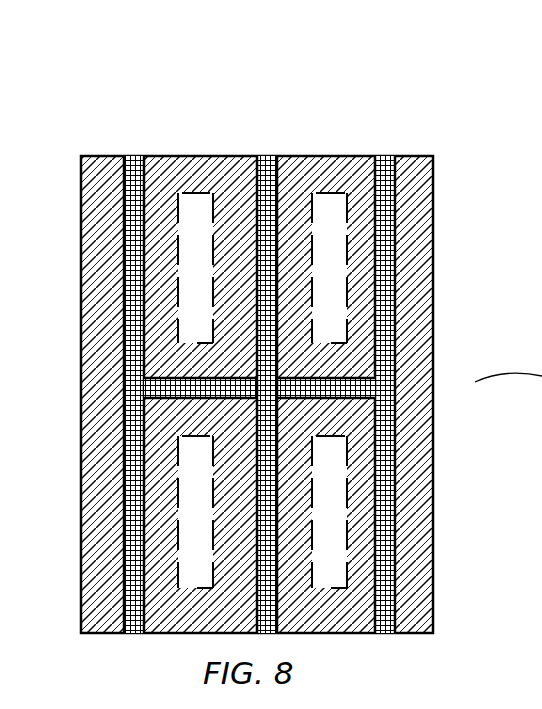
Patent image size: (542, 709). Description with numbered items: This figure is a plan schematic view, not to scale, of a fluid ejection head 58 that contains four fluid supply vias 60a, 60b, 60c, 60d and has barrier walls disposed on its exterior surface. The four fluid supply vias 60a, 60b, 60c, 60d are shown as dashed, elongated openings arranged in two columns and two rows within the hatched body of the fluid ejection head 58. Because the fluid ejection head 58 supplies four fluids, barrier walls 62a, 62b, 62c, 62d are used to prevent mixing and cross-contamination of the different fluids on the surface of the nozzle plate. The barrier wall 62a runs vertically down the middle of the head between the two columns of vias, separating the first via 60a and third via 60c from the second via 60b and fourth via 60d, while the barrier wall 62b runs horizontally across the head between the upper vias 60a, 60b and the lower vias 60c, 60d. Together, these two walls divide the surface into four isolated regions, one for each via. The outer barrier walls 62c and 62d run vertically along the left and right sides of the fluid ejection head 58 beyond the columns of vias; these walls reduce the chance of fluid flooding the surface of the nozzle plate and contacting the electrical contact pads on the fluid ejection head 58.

The fluid ejection head 58 is at (82, 111).
The fluid supply via 60a is at (196, 207).
The fluid supply via 60b is at (326, 207).
The fluid supply via 60c is at (190, 567).
The fluid supply via 60d is at (332, 577).
The barrier wall 62a is at (265, 176).
The barrier wall 62b is at (362, 383).
The barrier wall 62c is at (133, 176).
The barrier wall 62d is at (389, 176).